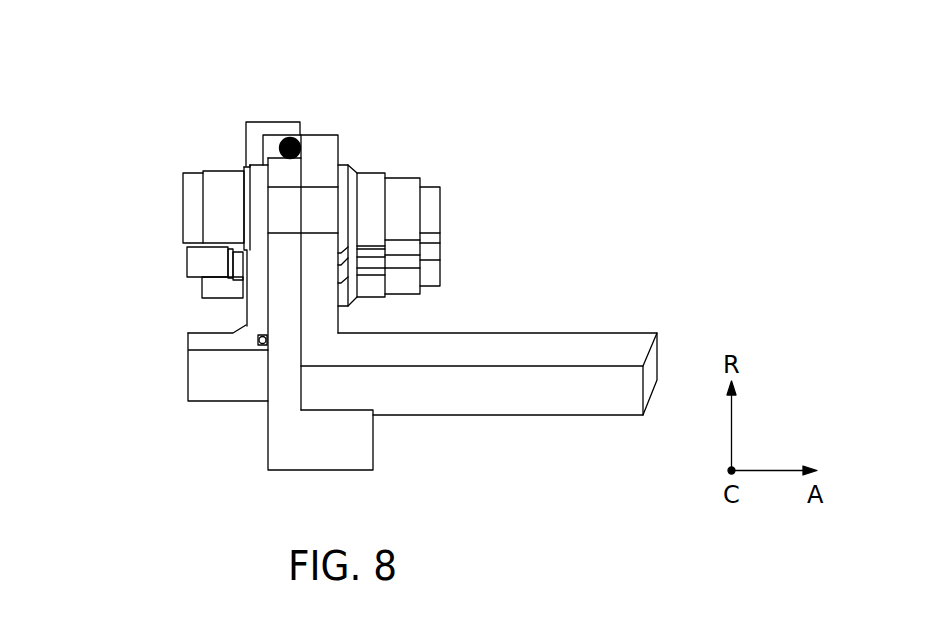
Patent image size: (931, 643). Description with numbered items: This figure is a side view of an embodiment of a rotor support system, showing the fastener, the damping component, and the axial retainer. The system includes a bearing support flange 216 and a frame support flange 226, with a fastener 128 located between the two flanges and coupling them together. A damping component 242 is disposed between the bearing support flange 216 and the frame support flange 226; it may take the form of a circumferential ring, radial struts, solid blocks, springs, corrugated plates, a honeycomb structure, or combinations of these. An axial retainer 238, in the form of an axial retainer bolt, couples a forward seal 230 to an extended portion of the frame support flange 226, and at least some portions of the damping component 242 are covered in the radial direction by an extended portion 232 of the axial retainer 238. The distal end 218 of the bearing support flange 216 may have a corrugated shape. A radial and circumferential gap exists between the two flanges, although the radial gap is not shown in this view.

The fastener 128 is at (190, 208).
The bearing support flange 216 is at (366, 444).
The distal end 218 is at (273, 158).
The frame support flange 226 is at (632, 338).
The forward seal 230 is at (192, 343).
The extended portion 232 is at (284, 112).
The axial retainer 238 is at (197, 264).
The damping component 242 is at (293, 139).